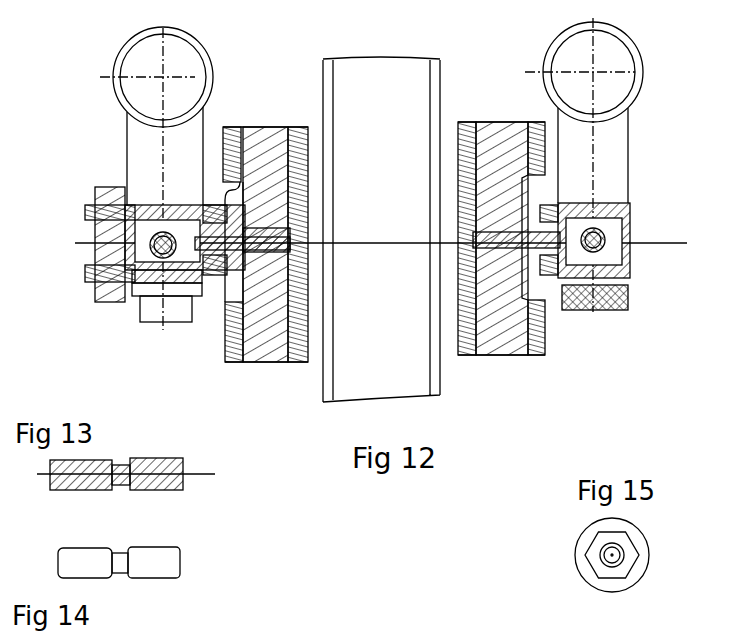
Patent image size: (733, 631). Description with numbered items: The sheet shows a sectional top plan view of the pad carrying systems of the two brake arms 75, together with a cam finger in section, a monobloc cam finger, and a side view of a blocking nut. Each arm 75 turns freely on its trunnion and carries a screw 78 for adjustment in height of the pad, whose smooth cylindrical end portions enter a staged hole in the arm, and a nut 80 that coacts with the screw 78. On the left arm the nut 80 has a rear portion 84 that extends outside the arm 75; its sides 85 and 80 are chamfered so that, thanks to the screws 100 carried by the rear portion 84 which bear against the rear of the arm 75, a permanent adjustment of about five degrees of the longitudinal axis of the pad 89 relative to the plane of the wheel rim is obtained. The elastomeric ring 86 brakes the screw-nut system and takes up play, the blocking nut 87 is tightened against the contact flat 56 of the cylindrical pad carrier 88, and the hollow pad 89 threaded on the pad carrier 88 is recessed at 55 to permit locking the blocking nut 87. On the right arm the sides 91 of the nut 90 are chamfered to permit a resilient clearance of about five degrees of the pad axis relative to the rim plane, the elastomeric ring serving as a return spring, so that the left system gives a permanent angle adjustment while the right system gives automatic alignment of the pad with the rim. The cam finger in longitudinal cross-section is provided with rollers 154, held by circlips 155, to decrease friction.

In FIG. 12, the brake arm 75 is at (178, 225).
In FIG. 12, the screw for adjustment in height of the pad 78 is at (162, 207).
In FIG. 12, the screws 100 is at (100, 205).
In FIG. 12, the nut for adjustment in height of the pads 80 is at (102, 268).
In FIG. 12, the rear portion of the nut 84 is at (112, 302).
In FIG. 12, the side of the nut 85 is at (165, 325).
In FIG. 12, the blocking nut 87 is at (215, 297).
In FIG. 12, the elastomeric ring 86 is at (212, 200).
In FIG. 12, the contact flat 56 is at (222, 198).
In FIG. 12, the recess of the pad 55 is at (235, 318).
In FIG. 12, the pad 89 is at (265, 362).
In FIG. 12, the pad carrier 88 is at (292, 362).
In FIG. 12, the sides of the nut 91 is at (628, 205).
In FIG. 12, the nut 90 is at (622, 248).
In FIG. 13, the circlips 155 is at (178, 485).
In FIG. 13, the rollers 154 is at (170, 490).